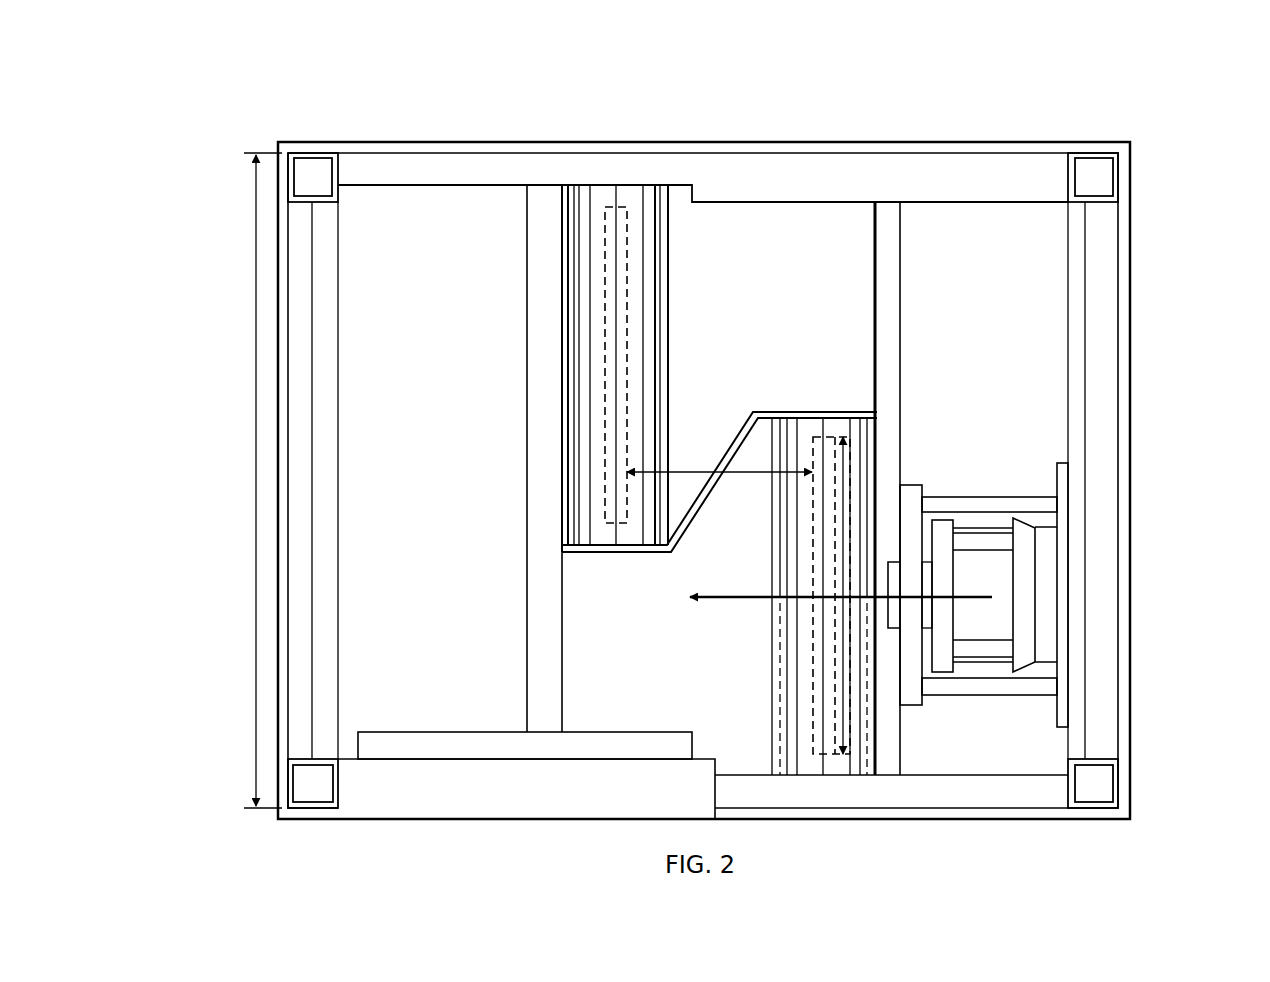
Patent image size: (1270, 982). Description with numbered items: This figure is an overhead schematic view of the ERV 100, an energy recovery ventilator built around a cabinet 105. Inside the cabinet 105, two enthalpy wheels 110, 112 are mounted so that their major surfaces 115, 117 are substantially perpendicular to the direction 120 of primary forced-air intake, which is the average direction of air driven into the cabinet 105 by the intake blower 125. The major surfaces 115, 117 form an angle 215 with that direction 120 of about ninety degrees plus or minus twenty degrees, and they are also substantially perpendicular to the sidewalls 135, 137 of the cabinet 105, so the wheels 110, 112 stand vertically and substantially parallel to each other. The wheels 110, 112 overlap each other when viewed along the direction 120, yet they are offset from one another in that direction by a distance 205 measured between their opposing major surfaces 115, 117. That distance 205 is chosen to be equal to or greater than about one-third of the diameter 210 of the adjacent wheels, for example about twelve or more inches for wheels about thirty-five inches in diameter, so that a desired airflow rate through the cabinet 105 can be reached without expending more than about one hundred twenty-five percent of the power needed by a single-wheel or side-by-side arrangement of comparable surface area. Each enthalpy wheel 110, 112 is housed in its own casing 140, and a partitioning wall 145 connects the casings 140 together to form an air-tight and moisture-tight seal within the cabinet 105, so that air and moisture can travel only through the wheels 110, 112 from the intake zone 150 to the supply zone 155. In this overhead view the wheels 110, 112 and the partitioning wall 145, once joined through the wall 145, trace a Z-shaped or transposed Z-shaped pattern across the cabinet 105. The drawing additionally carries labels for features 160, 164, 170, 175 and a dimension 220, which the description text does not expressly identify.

The ERV 100 is at (1203, 101).
The cabinet 105 is at (1050, 135).
The enthalpy wheel 110 is at (610, 530).
The enthalpy wheel 112 is at (832, 428).
The major surface 115 is at (603, 312).
The major surface 117 is at (835, 472).
The direction of primary forced-air intake 120 is at (732, 600).
The intake blower 125 is at (1025, 656).
The sidewall 135 is at (372, 128).
The sidewall 137 is at (1066, 832).
The casing 140 is at (577, 426).
The partitioning wall 145 is at (750, 410).
The intake zone 150 is at (955, 488).
The supply zone 155 is at (488, 458).
The base 160 is at (527, 821).
The platform 164 is at (409, 791).
The right side wall 170 is at (1158, 701).
The left side wall 175 is at (214, 308).
The distance 205 is at (692, 472).
The diameter 210 is at (848, 718).
The angle 215 is at (808, 535).
The housing height 220 is at (256, 480).